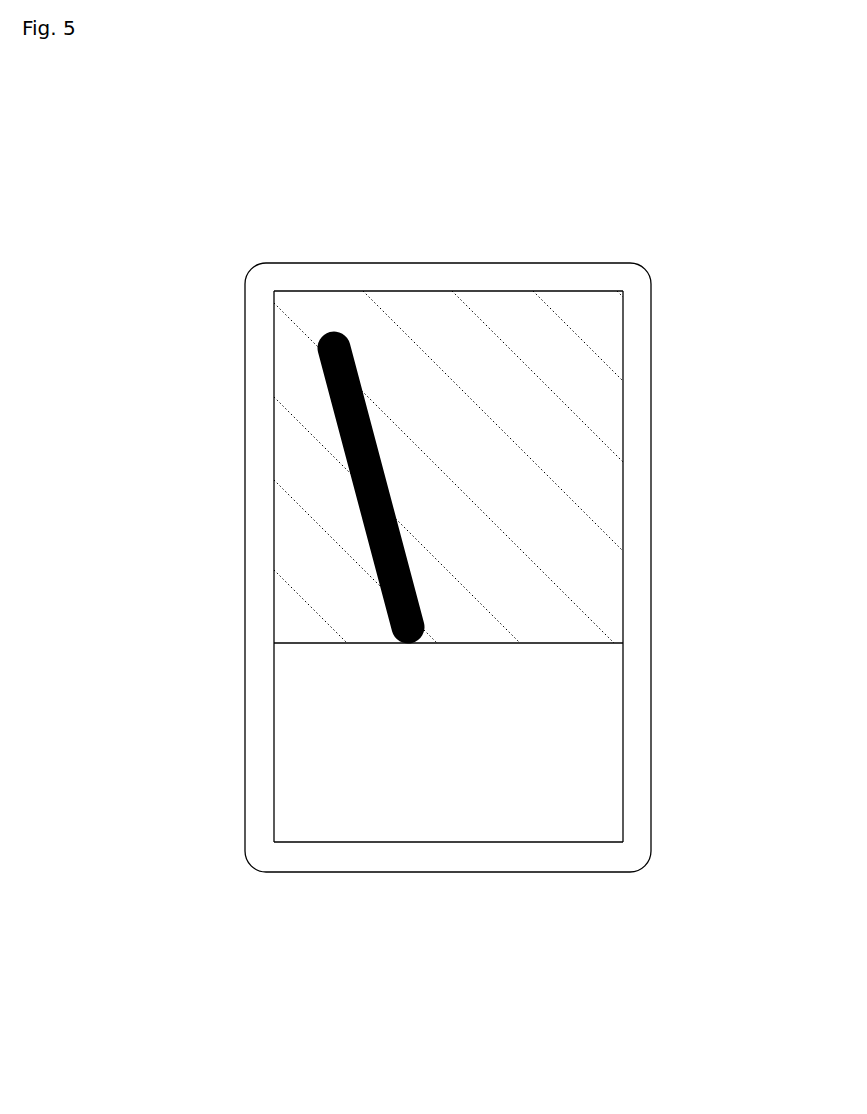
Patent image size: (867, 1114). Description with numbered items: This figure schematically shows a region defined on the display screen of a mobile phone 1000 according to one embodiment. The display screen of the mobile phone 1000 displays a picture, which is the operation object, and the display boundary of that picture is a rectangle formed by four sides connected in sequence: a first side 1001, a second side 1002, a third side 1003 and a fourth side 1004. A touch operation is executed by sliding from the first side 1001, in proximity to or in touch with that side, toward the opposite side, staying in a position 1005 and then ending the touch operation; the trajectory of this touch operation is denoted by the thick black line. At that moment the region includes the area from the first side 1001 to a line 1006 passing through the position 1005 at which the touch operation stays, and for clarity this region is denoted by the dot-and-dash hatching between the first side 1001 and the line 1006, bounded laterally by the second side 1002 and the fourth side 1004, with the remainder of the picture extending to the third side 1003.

The mobile phone 1000 is at (487, 233).
The first side 1001 is at (518, 291).
The second side 1002 is at (623, 590).
The third side 1003 is at (450, 843).
The fourth side 1004 is at (274, 608).
The position 1005 is at (413, 645).
The line 1006 is at (540, 643).